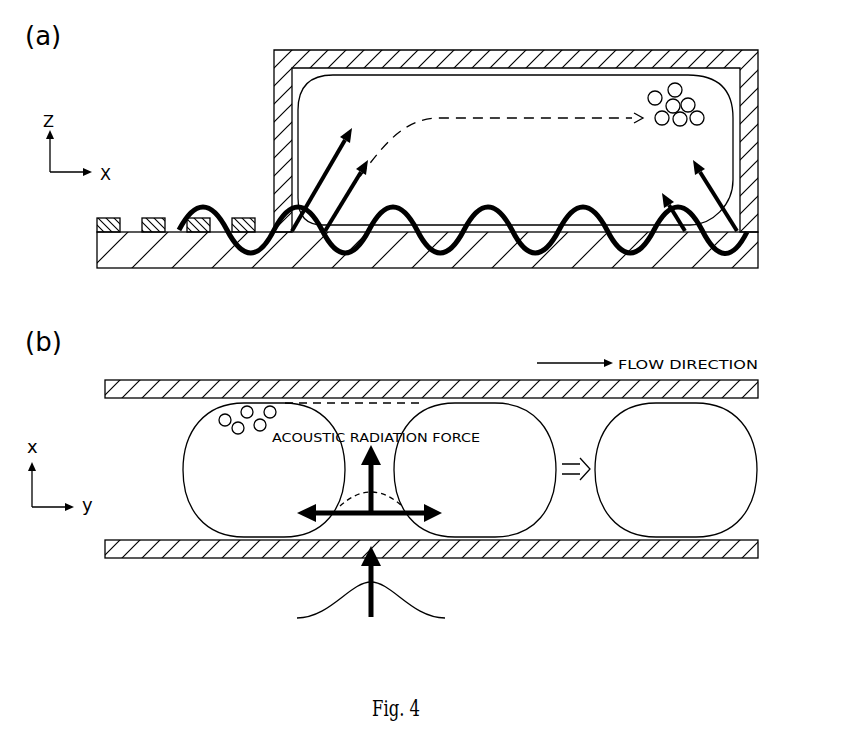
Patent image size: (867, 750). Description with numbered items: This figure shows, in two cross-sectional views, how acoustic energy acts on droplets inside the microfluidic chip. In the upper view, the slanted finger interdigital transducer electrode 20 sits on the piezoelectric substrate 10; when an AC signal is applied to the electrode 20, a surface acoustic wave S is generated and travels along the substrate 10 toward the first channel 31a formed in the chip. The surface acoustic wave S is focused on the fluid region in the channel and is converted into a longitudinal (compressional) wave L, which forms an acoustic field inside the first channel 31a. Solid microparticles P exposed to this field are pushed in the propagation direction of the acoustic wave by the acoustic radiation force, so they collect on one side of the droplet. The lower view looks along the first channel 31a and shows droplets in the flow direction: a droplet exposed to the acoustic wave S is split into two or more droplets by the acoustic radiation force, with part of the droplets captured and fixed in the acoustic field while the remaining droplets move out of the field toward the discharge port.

The piezoelectric substrate 10 is at (112, 258).
The slanted finger interdigital transducer (SIDT) electrode 20 is at (90, 224).
The first channel 31a is at (300, 53).
The surface acoustic wave S is at (447, 229).
The longitudinal wave L is at (514, 176).
The solid microparticles P is at (652, 92).